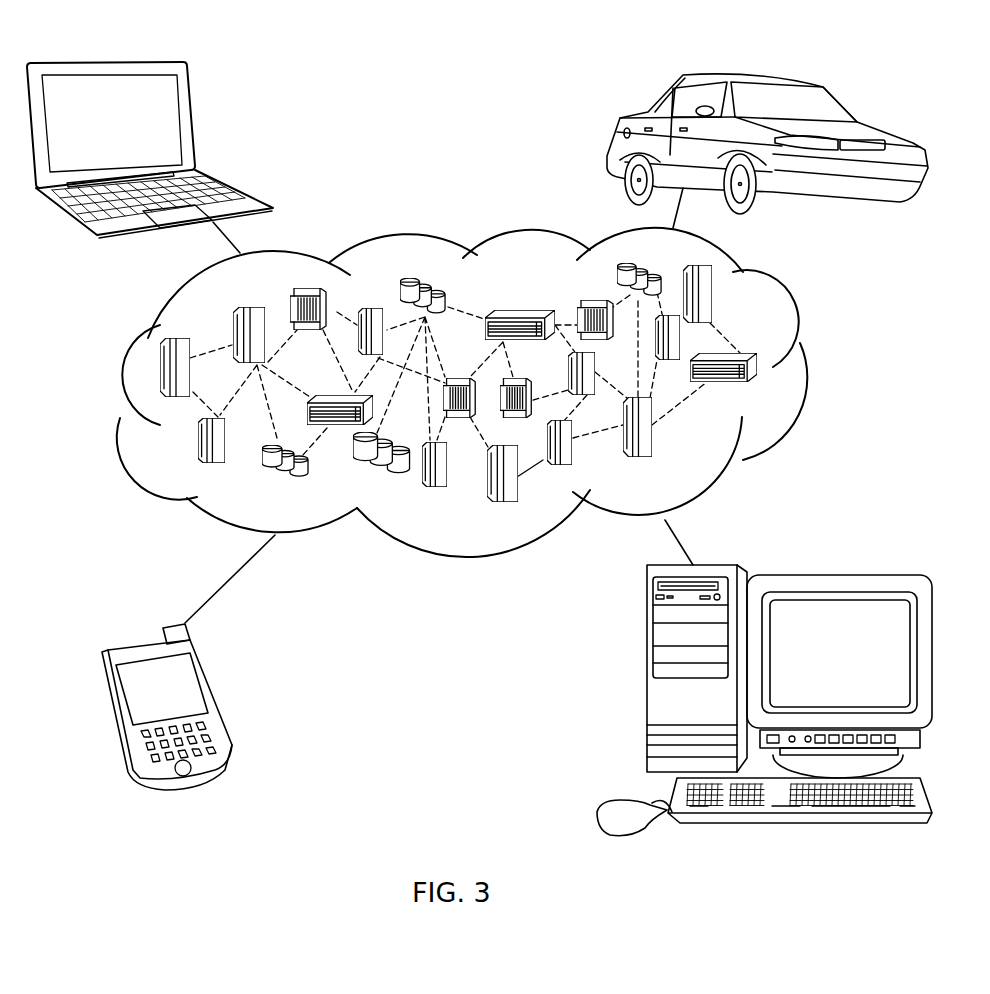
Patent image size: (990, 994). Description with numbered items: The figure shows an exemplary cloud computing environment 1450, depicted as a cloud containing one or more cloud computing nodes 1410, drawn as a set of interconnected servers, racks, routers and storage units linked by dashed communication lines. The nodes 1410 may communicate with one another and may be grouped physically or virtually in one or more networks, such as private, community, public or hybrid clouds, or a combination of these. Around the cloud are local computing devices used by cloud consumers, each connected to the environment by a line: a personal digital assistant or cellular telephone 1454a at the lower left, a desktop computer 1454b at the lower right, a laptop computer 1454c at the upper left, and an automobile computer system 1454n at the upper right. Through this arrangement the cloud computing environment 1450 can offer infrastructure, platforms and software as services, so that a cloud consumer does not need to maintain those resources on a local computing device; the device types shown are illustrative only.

The laptop computer 1454c is at (190, 112).
The automobile computer system 1454n is at (620, 120).
The cloud computing environment 1450 is at (802, 308).
The cloud computing nodes 1410 is at (773, 387).
The personal digital assistant (PDA) or cellular telephone 1454a is at (213, 690).
The desktop computer 1454b is at (647, 682).